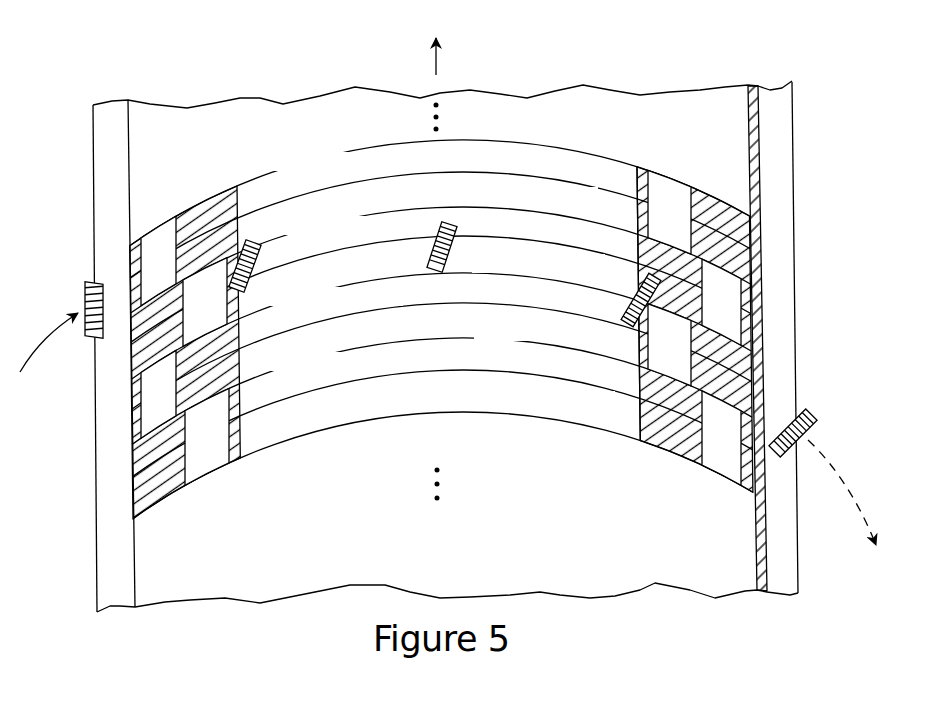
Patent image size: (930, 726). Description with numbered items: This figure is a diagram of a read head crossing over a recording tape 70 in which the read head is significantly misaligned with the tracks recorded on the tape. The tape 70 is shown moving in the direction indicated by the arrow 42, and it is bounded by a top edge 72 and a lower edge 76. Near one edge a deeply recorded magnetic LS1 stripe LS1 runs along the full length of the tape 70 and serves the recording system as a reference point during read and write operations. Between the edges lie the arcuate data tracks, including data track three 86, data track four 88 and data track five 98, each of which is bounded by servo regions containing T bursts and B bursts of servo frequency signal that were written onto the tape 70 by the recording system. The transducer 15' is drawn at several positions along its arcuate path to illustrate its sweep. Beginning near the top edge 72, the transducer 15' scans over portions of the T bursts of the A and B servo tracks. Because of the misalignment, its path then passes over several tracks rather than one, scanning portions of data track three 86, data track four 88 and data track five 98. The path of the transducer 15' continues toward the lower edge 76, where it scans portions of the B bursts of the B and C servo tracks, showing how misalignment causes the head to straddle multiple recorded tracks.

The transducer 15' is at (448, 326).
The arrow 42 is at (446, 62).
The tape 70 is at (453, 575).
The top edge 72 is at (97, 472).
The lower edge 76 is at (795, 112).
The data track 3 86 is at (606, 245).
The data track 4 88 is at (627, 277).
The data track 5 98 is at (633, 322).
The LS1 stripe LS1 is at (753, 80).